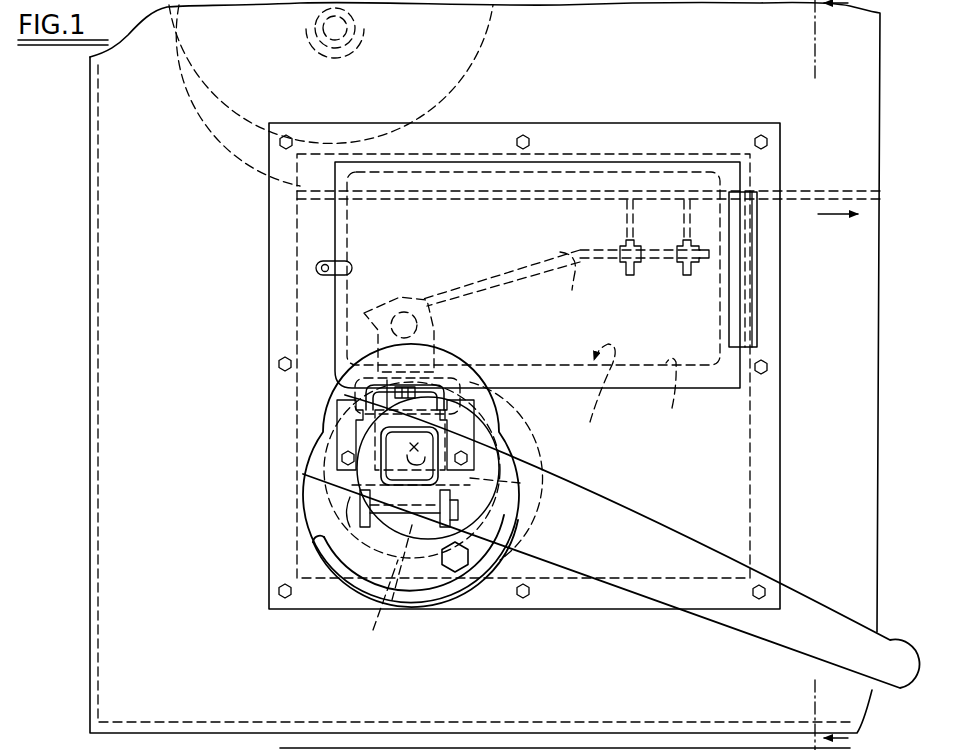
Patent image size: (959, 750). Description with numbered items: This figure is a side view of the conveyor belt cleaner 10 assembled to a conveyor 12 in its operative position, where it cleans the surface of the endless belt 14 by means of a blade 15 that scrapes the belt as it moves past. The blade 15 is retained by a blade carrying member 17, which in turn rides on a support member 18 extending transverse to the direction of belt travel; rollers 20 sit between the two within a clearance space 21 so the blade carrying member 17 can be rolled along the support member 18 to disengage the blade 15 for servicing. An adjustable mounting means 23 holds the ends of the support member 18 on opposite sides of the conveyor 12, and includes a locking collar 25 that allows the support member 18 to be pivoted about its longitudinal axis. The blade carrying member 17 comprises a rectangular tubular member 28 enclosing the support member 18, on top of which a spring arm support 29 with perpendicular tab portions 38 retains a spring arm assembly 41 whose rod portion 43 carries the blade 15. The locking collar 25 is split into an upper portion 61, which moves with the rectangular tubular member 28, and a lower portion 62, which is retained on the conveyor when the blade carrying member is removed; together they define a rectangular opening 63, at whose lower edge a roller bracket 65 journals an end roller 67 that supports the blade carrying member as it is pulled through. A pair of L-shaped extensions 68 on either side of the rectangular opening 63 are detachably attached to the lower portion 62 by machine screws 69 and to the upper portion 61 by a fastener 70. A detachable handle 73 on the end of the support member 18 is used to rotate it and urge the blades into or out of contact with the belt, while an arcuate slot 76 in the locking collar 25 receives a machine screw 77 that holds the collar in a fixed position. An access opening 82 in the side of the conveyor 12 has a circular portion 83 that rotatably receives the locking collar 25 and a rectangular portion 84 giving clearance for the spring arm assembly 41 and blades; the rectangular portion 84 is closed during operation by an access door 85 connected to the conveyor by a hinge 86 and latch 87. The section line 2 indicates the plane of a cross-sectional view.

The section line 2- 2 is at (846, 375).
The conveyor belt cleaner 10 is at (651, 119).
The conveyor 12 is at (186, 128).
The endless belt 14 is at (833, 200).
The blade 15 is at (676, 220).
The blade carrying member 17 is at (452, 395).
The support member 18 is at (340, 511).
The rollers 20 is at (380, 403).
The clearance space 21 is at (425, 392).
The adjustable mounting means 23 is at (303, 472).
The locking collar 25 is at (325, 528).
The rectangular tubular member 28 is at (387, 380).
The spring arm support 29 is at (397, 396).
The tab portions 38 is at (405, 300).
The spring arm assembly 41 is at (515, 265).
The rod portion 43 is at (569, 282).
The upper portion 61 is at (498, 437).
The lower portion 62 is at (505, 505).
The rectangular opening 63 is at (450, 483).
The roller bracket 65 is at (327, 549).
The end roller 67 is at (412, 525).
The L-shaped extensions 68 is at (347, 420).
The machine screws 69 is at (345, 455).
The fastener 70 is at (360, 418).
The detachable handle 73 is at (664, 539).
The arcuate slot 76 is at (340, 578).
The machine screw 77 is at (462, 573).
The access opening 82 is at (599, 396).
The circular portion 83 is at (382, 593).
The rectangular portion 84 is at (673, 398).
The access door 85 is at (733, 372).
The hinge 86 is at (757, 268).
The latch 87 is at (327, 260).